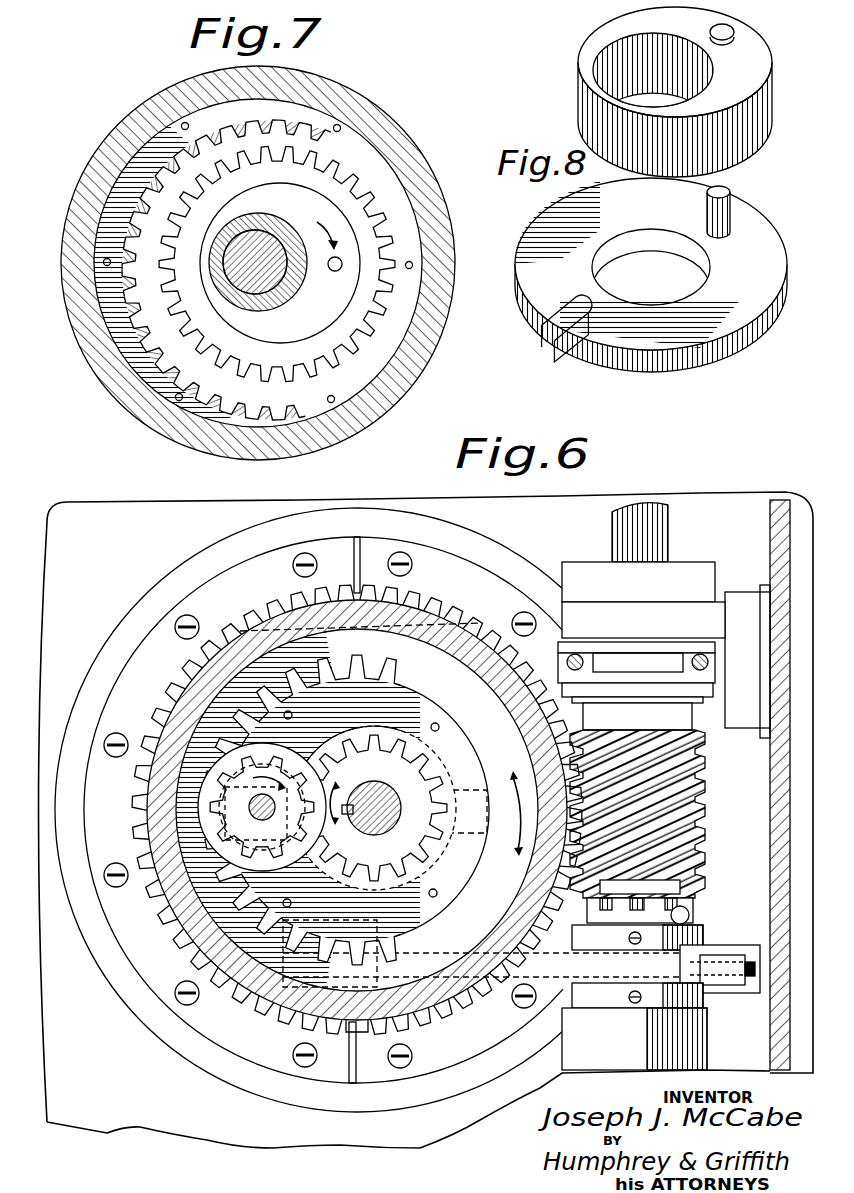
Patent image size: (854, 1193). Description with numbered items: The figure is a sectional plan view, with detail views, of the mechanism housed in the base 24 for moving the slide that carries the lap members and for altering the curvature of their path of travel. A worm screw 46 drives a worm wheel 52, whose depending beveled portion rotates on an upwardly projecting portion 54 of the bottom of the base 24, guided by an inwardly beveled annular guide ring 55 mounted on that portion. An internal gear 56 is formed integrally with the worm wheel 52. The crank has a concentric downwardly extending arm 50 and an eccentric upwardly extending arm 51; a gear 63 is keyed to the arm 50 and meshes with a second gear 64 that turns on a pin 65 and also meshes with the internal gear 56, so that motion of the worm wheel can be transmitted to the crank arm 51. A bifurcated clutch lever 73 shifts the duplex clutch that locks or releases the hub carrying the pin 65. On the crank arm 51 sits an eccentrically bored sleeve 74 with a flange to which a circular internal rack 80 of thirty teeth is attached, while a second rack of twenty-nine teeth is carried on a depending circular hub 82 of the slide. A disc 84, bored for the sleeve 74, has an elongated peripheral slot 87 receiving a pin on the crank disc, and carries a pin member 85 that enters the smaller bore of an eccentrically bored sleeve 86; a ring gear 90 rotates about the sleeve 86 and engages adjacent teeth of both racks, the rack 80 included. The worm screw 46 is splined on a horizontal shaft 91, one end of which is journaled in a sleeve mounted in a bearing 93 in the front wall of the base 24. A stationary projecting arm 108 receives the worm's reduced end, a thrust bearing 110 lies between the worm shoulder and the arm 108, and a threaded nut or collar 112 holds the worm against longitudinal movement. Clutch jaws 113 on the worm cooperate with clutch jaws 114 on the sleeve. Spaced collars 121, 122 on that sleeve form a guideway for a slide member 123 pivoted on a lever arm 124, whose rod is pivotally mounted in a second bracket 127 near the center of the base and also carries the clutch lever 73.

In FIG. 6, the base 24 is at (350, 1138).
In FIG. 6, the worm screw 46 is at (697, 800).
In FIG. 7, the concentric vertical downwardly extending arm 50 is at (213, 235).
In FIG. 6, the concentric vertical downwardly extending arm 50 is at (375, 790).
In FIG. 7, the eccentric vertical upwardly extending arm 51 is at (268, 232).
In FIG. 6, the worm wheel 52 is at (225, 1006).
In FIG. 6, the upwardly projecting portion 54 is at (225, 1065).
In FIG. 6, the annular guide ring 55 is at (200, 1015).
In FIG. 6, the internal gear 56 is at (197, 898).
In FIG. 6, the gear 63 is at (374, 808).
In FIG. 6, the second gear 64 is at (210, 793).
In FIG. 6, the pin 65 is at (249, 808).
In FIG. 6, the bifurcated clutch lever 73 is at (460, 908).
In FIG. 7, the eccentrically bored sleeve 74 is at (317, 224).
In FIG. 7, the circular internal rack 80 is at (402, 308).
In FIG. 7, the depending circular hub 82 is at (433, 352).
In FIG. 8, the disc 84 is at (752, 340).
In FIG. 7, the pin member 85 is at (341, 262).
In FIG. 8, the pin member 85 is at (735, 200).
In FIG. 7, the eccentrically bored sleeve 86 is at (258, 263).
In FIG. 8, the eccentrically bored sleeve 86 is at (772, 82).
In FIG. 8, the elongated peripheral slot 87 is at (563, 340).
In FIG. 7, the ring gear 90 is at (372, 293).
In FIG. 6, the horizontal shaft 91 is at (652, 530).
In FIG. 6, the bearing 93 is at (634, 1039).
In FIG. 6, the stationary projecting arm 108 is at (657, 610).
In FIG. 6, the thrust bearing 110 is at (602, 652).
In FIG. 6, the threaded nut or collar 112 is at (578, 570).
In FIG. 6, the clutch jaws 113 is at (675, 907).
In FIG. 6, the clutch jaws 114 is at (688, 918).
In FIG. 6, the collar 121 is at (637, 996).
In FIG. 6, the collar 122 is at (637, 938).
In FIG. 6, the slide member 123 is at (702, 996).
In FIG. 6, the lever arm 124 is at (670, 882).
In FIG. 6, the second bracket 127 is at (228, 1056).